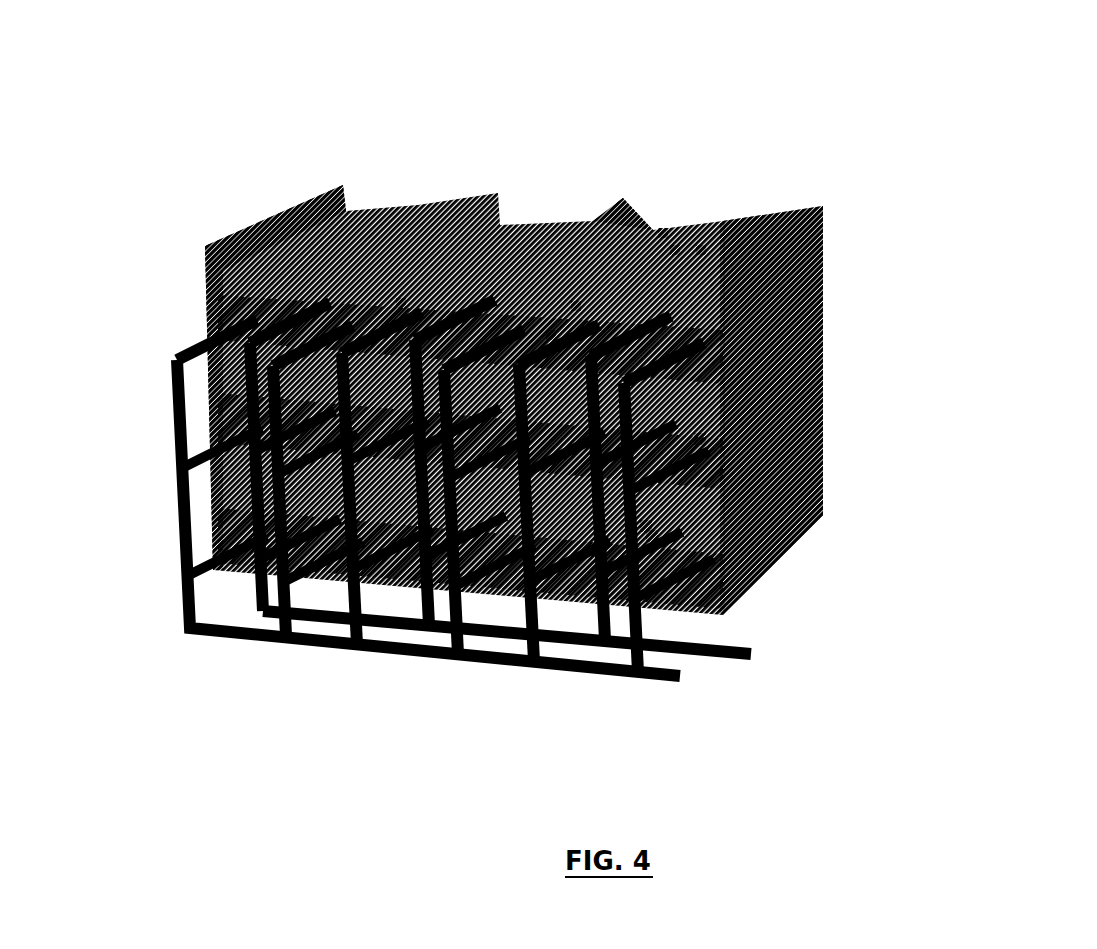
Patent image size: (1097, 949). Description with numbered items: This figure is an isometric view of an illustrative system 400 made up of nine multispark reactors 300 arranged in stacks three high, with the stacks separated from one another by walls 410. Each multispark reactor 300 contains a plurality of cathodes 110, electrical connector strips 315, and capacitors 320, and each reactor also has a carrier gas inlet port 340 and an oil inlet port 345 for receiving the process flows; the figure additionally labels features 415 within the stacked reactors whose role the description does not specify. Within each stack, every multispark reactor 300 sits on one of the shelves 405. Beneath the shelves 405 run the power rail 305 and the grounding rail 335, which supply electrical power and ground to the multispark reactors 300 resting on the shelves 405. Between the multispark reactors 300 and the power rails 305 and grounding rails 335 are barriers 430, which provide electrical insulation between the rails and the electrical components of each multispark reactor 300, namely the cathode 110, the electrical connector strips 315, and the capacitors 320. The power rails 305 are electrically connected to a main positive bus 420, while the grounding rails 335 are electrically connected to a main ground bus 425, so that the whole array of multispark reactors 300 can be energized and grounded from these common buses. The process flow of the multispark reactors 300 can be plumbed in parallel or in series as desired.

The multispark reactor system 400 is at (152, 90).
The multispark reactor 300 is at (396, 205).
The power rail 305 is at (180, 345).
The grounding rail 335 is at (243, 417).
The memory cells 415 is at (568, 298).
The walls 410 is at (612, 225).
The capacitors 320 is at (655, 225).
The cathodes 110 is at (667, 242).
The electrical connector strips 315 is at (693, 242).
The barriers 430 is at (710, 366).
The shelves 405 is at (693, 432).
The oil inlet port 345 is at (638, 518).
The carrier gas inlet port 340 is at (643, 527).
The main positive bus 420 is at (623, 662).
The main ground bus 425 is at (708, 645).